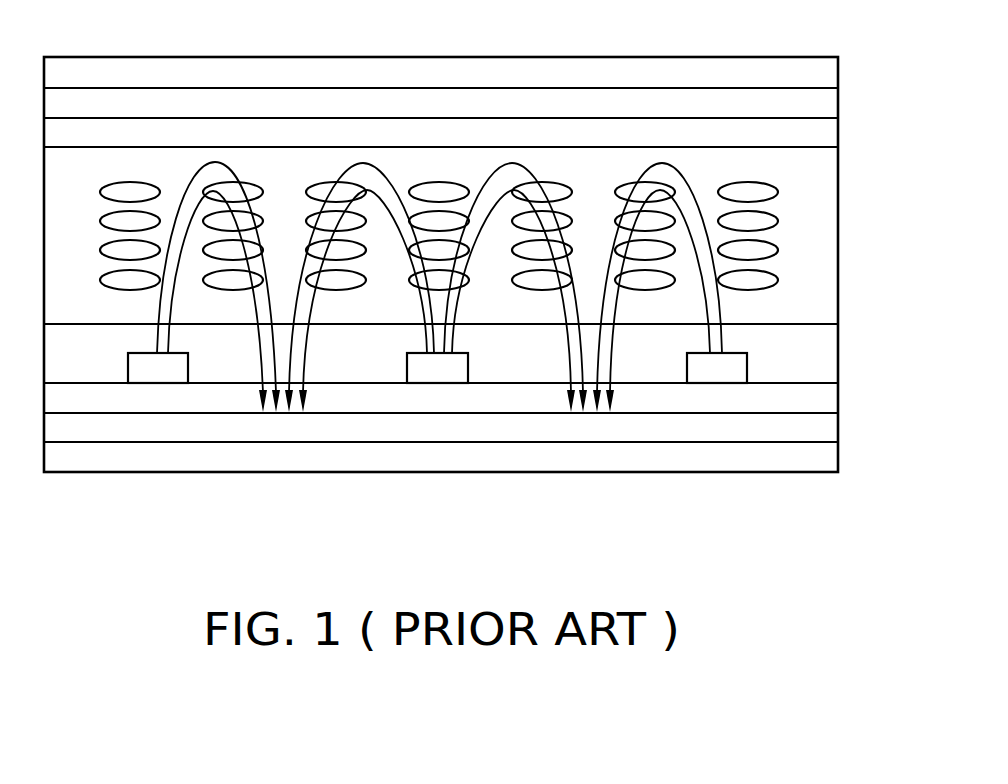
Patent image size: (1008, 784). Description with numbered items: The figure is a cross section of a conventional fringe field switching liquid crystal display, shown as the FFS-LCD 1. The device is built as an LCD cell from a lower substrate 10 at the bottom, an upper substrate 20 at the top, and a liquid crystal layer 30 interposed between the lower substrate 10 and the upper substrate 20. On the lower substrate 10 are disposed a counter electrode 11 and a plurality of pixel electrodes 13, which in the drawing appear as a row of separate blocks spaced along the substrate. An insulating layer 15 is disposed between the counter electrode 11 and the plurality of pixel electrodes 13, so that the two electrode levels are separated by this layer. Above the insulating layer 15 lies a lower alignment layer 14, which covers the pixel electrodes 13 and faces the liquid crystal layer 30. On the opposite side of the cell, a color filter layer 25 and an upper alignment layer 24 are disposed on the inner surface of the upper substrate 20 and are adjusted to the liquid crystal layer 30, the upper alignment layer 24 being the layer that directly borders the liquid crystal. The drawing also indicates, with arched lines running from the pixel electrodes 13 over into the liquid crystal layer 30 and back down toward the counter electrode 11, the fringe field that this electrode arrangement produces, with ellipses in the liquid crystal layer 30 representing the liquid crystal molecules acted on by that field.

The FFS-LCD 1 is at (450, 27).
The lower substrate 10 is at (818, 457).
The counter electrode 11 is at (818, 428).
The pixel electrodes 13 is at (728, 368).
The lower alignment layer 14 is at (818, 339).
The insulating layer 15 is at (818, 398).
The liquid crystal layer 30 is at (800, 233).
The upper alignment layer 24 is at (820, 133).
The color filter layer 25 is at (820, 103).
The upper substrate 20 is at (820, 74).